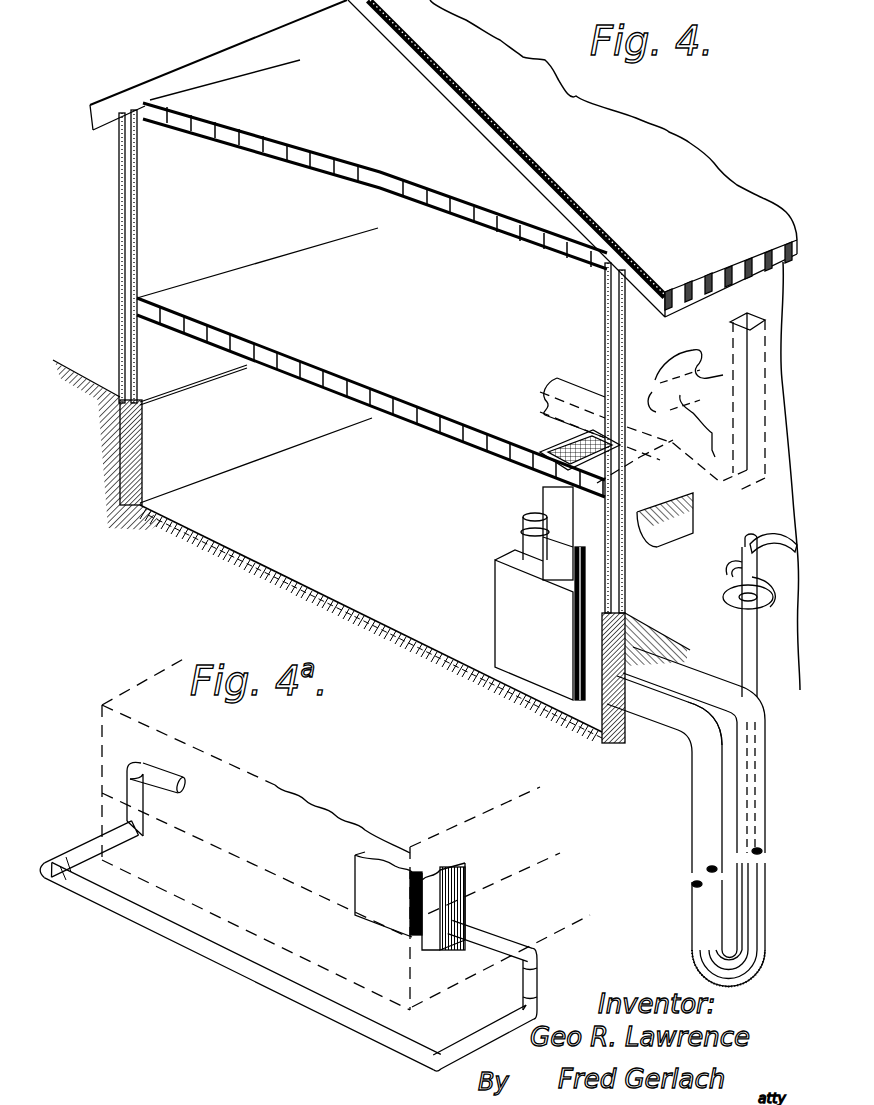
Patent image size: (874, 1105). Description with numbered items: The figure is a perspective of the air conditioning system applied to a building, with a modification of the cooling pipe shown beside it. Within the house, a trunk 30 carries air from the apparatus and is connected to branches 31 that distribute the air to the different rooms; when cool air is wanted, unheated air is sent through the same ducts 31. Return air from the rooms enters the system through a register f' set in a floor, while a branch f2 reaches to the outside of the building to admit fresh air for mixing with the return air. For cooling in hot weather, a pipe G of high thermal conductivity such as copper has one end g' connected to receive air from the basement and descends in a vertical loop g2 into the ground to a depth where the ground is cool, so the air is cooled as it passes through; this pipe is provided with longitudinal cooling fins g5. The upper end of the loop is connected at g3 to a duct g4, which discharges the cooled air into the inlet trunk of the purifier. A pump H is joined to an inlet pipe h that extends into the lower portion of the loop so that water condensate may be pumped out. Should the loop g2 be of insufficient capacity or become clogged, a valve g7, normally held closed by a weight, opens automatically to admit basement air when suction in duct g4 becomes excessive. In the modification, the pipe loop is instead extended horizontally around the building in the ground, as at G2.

In FIG. 4, the branches 31 is at (553, 372).
In FIG. 4, the register f' is at (570, 448).
In FIG. 4, the branch f2 is at (640, 492).
In FIG. 4, the trunk 30 is at (715, 500).
In FIG. 4, the duct g4 is at (593, 682).
In FIG. 4A, the duct g4 is at (433, 942).
In FIG. 4, the valve g7 is at (775, 537).
In FIG. 4, the pump H is at (754, 615).
In FIG. 4, the inlet pipe h is at (750, 652).
In FIG. 4, the end of pipe g' is at (713, 684).
In FIG. 4, the vertical loop g2 is at (753, 793).
In FIG. 4, the connection g3 is at (660, 745).
In FIG. 4, the pipe G is at (703, 808).
In FIG. 4, the longitudinal cooling fins g5 is at (700, 973).
In FIG. 4A, the horizontal pipe loop G2 is at (193, 952).